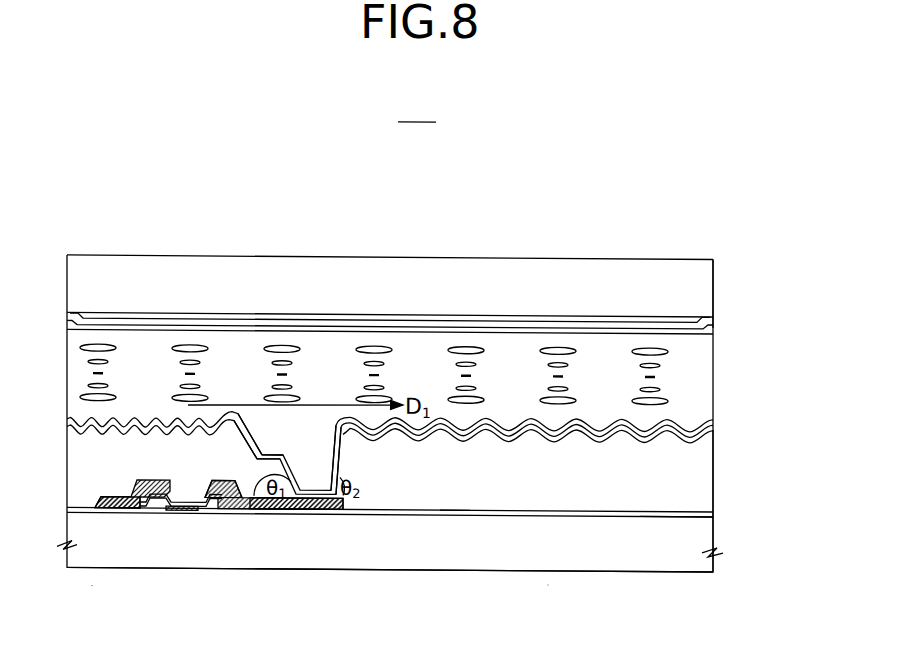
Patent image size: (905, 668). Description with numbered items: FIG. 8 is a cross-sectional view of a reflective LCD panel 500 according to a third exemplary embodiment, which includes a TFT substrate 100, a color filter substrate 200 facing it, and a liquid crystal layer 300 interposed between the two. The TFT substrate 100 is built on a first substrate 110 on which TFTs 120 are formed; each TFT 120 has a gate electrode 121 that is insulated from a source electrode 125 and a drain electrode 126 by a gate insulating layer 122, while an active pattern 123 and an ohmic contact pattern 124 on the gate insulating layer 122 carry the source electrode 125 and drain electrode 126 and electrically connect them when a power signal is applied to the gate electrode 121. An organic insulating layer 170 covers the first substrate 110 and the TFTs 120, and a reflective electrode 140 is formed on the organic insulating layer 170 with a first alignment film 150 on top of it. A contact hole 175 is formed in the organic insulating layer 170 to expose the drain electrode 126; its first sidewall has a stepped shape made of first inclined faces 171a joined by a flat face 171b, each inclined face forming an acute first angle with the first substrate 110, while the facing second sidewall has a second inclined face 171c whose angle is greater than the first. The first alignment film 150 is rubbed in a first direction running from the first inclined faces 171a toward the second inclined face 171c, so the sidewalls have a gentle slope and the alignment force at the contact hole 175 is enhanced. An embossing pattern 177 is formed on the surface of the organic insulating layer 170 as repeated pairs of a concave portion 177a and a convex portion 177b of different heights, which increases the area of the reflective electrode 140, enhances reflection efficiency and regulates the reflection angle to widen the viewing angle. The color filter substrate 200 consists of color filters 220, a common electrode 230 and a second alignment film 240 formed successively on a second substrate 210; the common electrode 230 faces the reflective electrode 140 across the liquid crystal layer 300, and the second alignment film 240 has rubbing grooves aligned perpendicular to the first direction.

The reflective LCD panel 500 is at (419, 110).
The color filter substrate 200 is at (726, 252).
The second substrate 210 is at (602, 266).
The color filters 220 is at (534, 314).
The common electrode 230 is at (448, 315).
The second alignment film 240 is at (362, 318).
The liquid crystal layer 300 is at (700, 377).
The TFT substrate 100 is at (726, 425).
The first substrate 110 is at (403, 542).
The TFT 120 is at (352, 624).
The gate electrode 121 is at (193, 508).
The gate insulating layer 122 is at (152, 509).
The active pattern 123 is at (138, 509).
The ohmic contact pattern 124 is at (263, 508).
The source electrode 125 is at (102, 510).
The drain electrode 126 is at (325, 510).
The reflective electrode 140 is at (502, 430).
The first alignment film 150 is at (662, 428).
The organic insulating layer 170 is at (453, 485).
The first inclined faces 171a is at (257, 455).
The flat face 171b is at (276, 448).
The second inclined face 171c is at (342, 454).
The contact hole 175 is at (318, 431).
The embossing pattern 177 is at (640, 620).
The concave portion 177a is at (550, 429).
The convex portion 177b is at (570, 428).